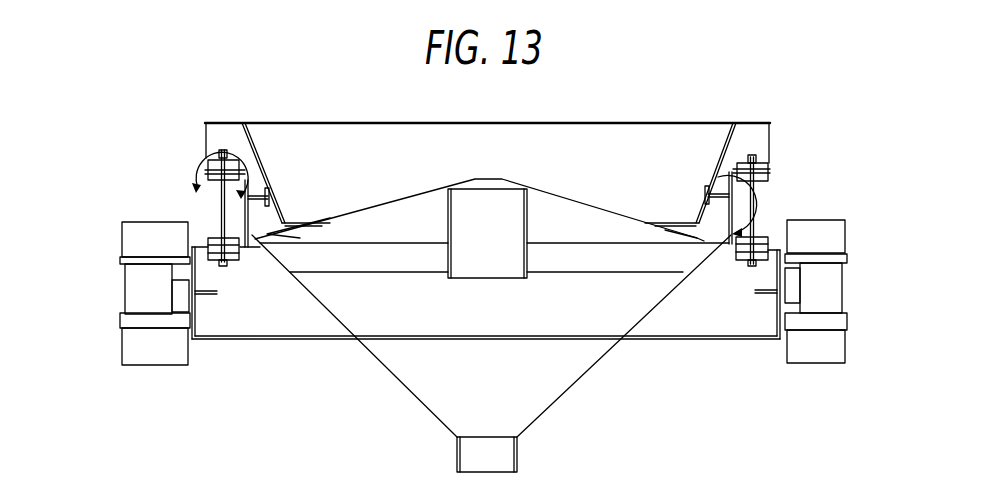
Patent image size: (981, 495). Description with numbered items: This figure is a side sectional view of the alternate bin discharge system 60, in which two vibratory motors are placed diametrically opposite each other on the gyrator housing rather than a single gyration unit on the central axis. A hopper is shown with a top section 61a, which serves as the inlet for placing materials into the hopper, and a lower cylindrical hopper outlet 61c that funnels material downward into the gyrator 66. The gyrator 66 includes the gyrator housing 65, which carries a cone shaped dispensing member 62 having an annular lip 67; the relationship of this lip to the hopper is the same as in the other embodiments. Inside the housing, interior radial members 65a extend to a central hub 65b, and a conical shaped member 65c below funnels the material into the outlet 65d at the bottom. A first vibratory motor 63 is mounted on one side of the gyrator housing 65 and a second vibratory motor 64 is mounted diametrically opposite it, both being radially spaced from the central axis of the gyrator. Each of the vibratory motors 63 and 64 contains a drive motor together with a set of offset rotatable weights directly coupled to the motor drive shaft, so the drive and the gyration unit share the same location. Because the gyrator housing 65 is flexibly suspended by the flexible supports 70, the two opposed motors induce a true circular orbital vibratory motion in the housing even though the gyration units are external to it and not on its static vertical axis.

The bin discharge system 60 is at (588, 86).
The top section 61a is at (720, 142).
The hopper outlet 61c is at (655, 225).
The cone shaped dispensing member 62 is at (553, 195).
The first vibratory motor 63 is at (140, 221).
The second vibratory motor 64 is at (820, 219).
The gyrator housing 65 is at (263, 340).
The interior radial members 65a is at (404, 274).
The hub 65b is at (525, 280).
The conical shaped member 65c is at (580, 377).
The outlet 65d is at (519, 448).
The gyrator 66 is at (336, 377).
The annular lip 67 is at (283, 233).
The flexible supports 70 is at (221, 216).